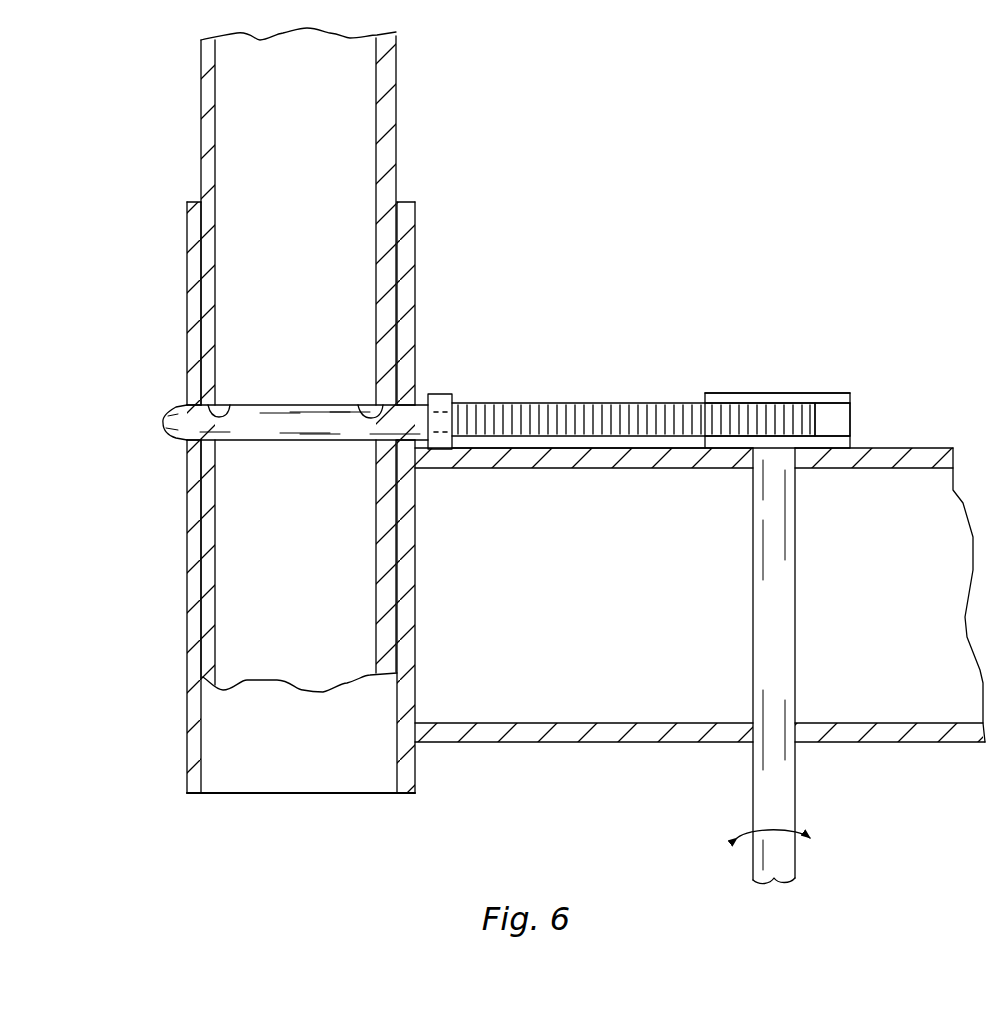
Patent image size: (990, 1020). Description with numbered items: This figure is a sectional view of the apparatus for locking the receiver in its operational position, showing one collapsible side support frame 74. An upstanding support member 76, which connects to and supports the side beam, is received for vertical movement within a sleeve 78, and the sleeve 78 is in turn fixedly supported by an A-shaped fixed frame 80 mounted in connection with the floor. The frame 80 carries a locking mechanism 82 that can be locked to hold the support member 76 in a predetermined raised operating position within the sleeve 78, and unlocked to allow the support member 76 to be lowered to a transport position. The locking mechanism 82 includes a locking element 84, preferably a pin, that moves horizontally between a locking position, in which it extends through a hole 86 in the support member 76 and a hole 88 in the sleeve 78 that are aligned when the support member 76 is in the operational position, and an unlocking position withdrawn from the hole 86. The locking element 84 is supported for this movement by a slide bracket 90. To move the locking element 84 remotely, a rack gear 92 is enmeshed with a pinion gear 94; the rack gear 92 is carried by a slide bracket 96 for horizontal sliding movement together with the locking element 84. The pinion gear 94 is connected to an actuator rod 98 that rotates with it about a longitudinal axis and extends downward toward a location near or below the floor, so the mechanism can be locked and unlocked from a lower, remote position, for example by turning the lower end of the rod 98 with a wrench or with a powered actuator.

The collapsible side support frame 74 is at (846, 166).
The upstanding support member 76 is at (398, 98).
The sleeve 78 is at (412, 232).
The A-shaped fixed frame 80 is at (947, 744).
The locking mechanism 82 is at (855, 391).
The locking element 84 is at (311, 446).
The hole through support member 86 is at (233, 410).
The hole through sleeve 88 is at (178, 410).
The slide bracket 90 is at (450, 396).
The rack gear 92 is at (591, 440).
The pinion gear 94 is at (818, 425).
The slide bracket 96 is at (777, 393).
The actuator rod 98 is at (798, 577).